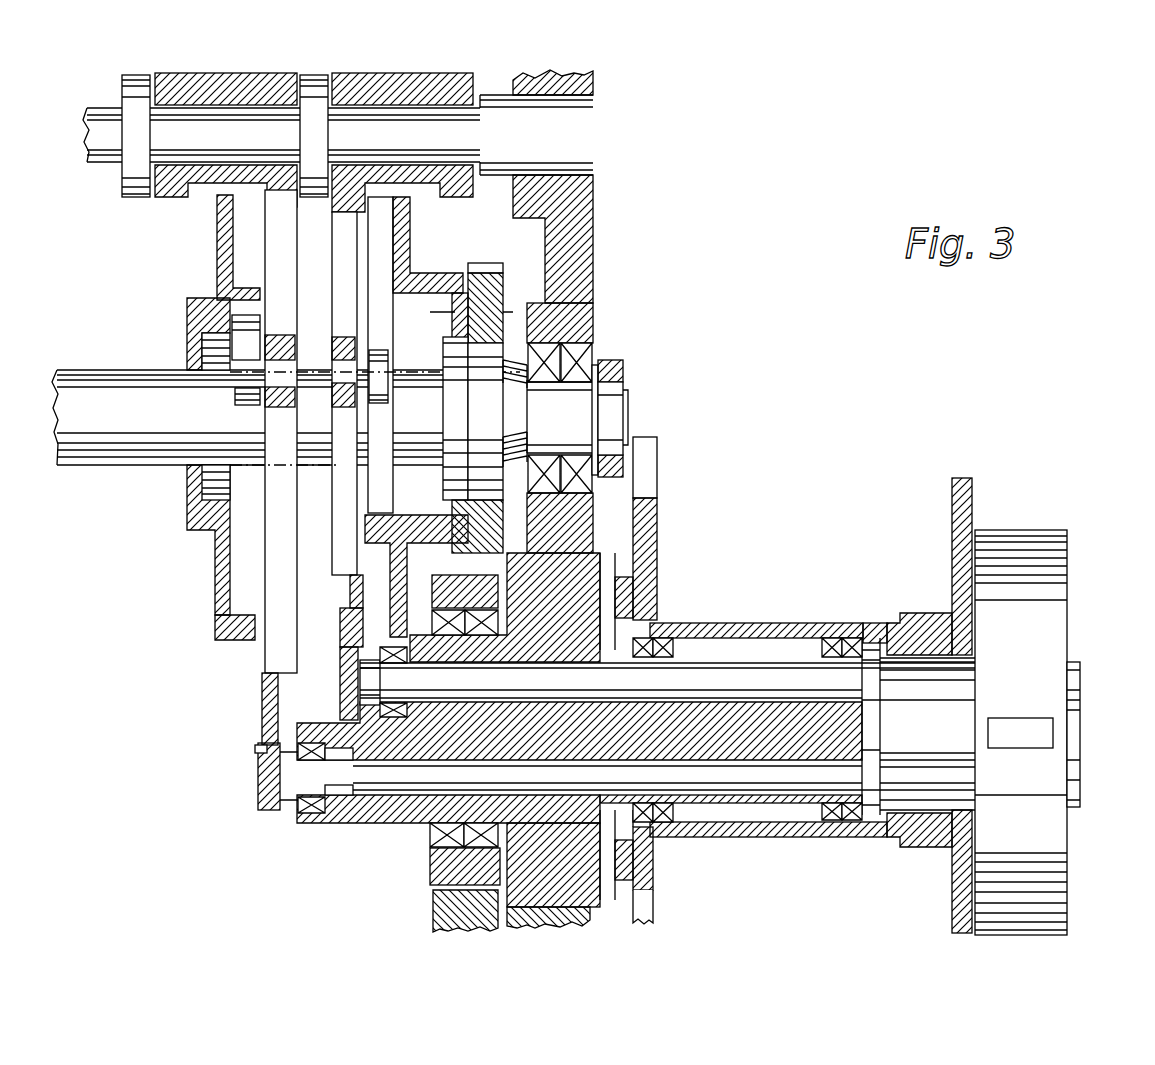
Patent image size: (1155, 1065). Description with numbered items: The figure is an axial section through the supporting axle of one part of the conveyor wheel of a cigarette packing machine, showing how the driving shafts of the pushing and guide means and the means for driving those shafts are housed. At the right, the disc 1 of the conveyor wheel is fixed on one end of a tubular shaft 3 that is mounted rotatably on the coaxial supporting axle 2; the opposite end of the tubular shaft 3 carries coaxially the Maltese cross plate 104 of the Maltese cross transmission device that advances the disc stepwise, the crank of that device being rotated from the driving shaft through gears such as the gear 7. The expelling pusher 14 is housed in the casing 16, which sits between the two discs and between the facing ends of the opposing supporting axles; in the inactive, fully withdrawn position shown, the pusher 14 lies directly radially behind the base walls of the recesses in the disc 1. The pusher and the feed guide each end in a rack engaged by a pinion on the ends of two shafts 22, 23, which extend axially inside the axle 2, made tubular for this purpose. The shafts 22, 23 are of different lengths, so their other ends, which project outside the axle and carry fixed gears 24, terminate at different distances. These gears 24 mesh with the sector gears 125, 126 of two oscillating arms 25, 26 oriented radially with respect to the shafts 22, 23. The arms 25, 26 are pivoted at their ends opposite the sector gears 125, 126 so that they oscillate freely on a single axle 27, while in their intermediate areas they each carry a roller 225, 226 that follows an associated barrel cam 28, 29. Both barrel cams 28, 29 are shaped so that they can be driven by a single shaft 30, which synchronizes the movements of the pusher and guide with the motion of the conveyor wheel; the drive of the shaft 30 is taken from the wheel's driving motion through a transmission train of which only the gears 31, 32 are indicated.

The disc 1 is at (950, 506).
The axle 2 is at (772, 663).
The tubular shaft 3 is at (862, 627).
The gear 7 is at (432, 908).
The expelling pusher 14 is at (1020, 748).
The casing 16 is at (1058, 540).
The shaft 22 is at (752, 790).
The shaft 23 is at (718, 673).
The gear 24 is at (342, 690).
The oscillating arm 25 is at (272, 567).
The oscillating arm 26 is at (342, 508).
The axle 27 is at (220, 152).
The barrel cam 28 is at (232, 296).
The barrel cam 29 is at (433, 290).
The shaft 30 is at (413, 376).
The gear 31 is at (493, 313).
The gear 32 is at (432, 870).
The Maltese cross plate 104 is at (657, 548).
The sector gear 125 is at (262, 725).
The sector gear 126 is at (345, 628).
The roller 225 is at (200, 330).
The roller 226 is at (392, 405).